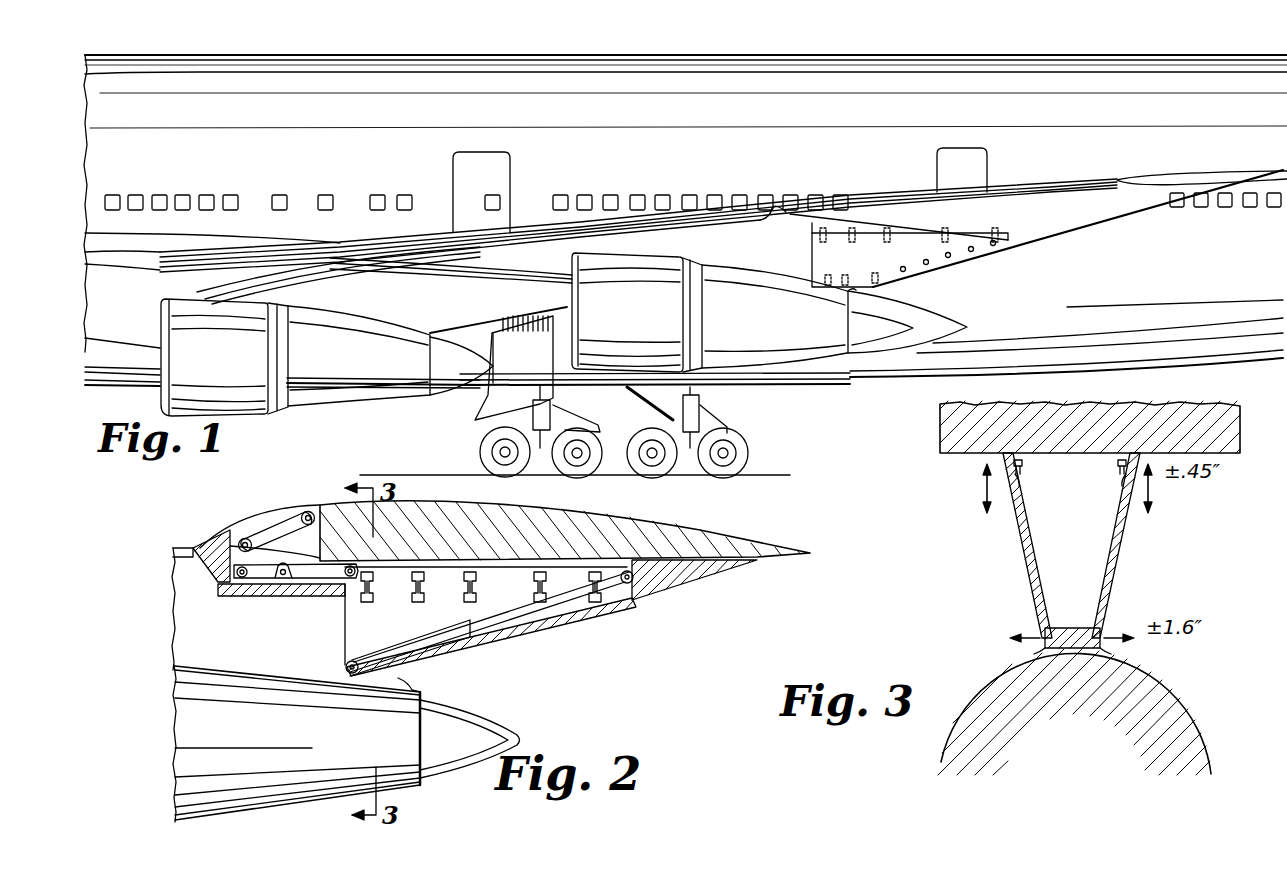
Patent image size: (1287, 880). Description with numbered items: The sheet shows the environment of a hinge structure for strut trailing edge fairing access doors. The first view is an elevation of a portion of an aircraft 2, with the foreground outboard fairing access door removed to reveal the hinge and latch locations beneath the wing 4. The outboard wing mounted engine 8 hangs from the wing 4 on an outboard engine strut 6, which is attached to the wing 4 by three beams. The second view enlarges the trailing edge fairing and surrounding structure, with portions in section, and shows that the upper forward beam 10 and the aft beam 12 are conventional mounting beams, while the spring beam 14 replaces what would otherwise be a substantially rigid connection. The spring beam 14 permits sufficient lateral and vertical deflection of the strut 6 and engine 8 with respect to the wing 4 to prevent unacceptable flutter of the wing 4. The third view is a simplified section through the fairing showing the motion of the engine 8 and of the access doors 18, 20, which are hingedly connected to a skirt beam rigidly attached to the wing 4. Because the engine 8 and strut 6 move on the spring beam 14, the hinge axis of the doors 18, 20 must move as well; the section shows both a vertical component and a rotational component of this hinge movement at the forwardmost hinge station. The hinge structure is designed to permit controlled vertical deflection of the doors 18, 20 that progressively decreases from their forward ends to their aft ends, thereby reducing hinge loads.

In FIG. 1, the aircraft 2 is at (840, 400).
In FIG. 1, the wing 4 is at (1040, 184).
In FIG. 2, the wing 4 is at (695, 527).
In FIG. 3, the wing 4 is at (1193, 406).
In FIG. 1, the outboard engine strut 6 is at (777, 256).
In FIG. 2, the outboard engine strut 6 is at (212, 633).
In FIG. 1, the engine 8 is at (779, 329).
In FIG. 2, the engine 8 is at (298, 738).
In FIG. 3, the engine 8 is at (1185, 718).
In FIG. 2, the upper forward beam 10 is at (266, 530).
In FIG. 2, the aft beam 12 is at (420, 648).
In FIG. 2, the spring beam 14 is at (310, 592).
In FIG. 3, the strut trailing edge fairing access door 18 is at (1024, 568).
In FIG. 3, the strut trailing edge fairing access door 20 is at (1112, 562).